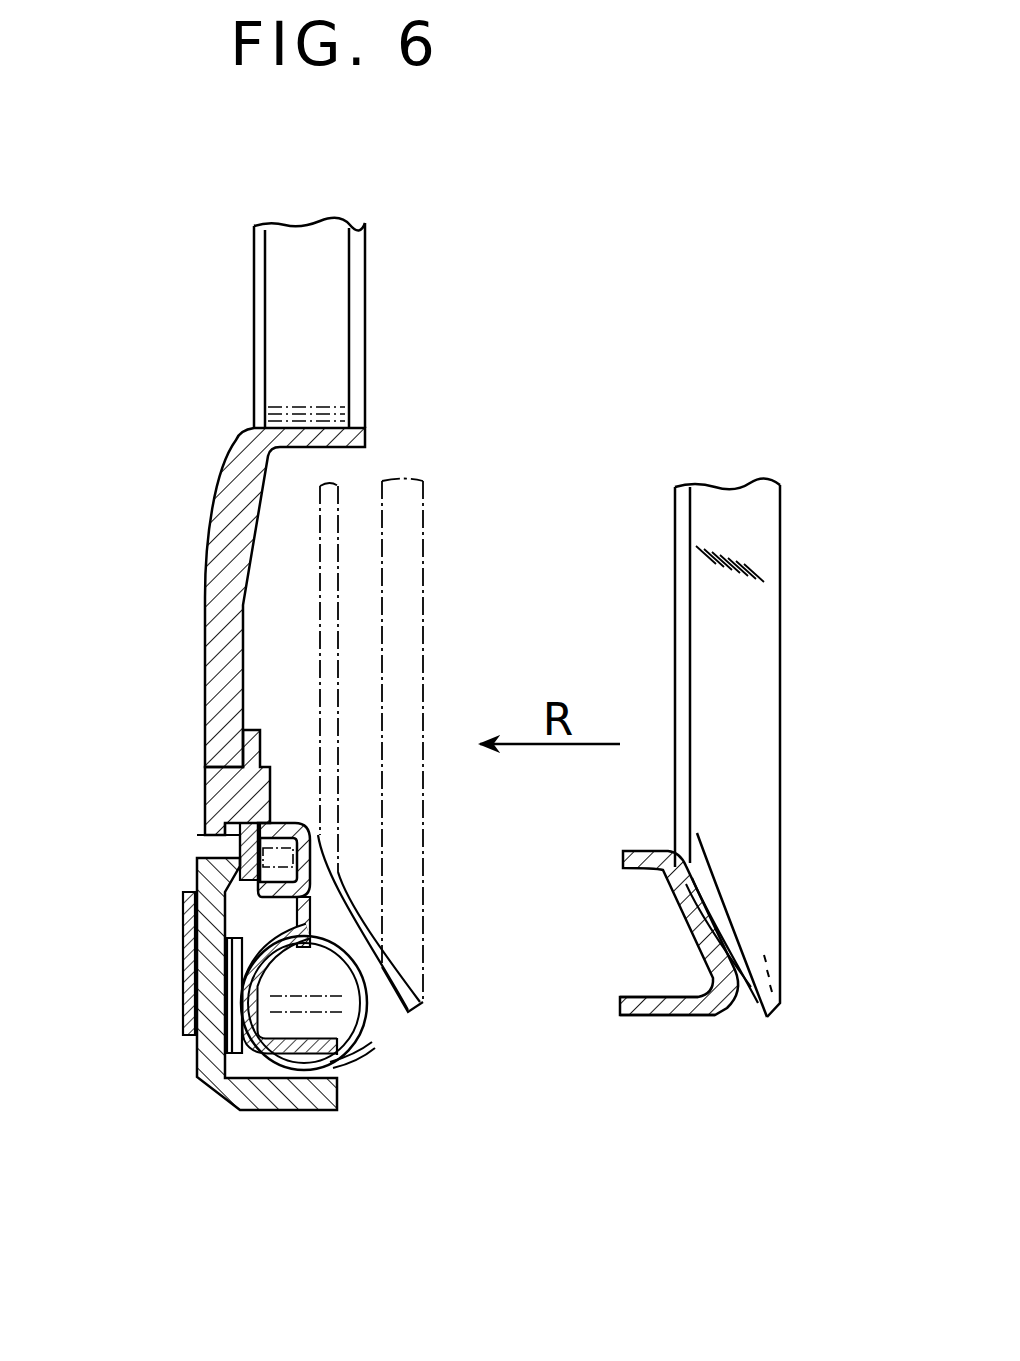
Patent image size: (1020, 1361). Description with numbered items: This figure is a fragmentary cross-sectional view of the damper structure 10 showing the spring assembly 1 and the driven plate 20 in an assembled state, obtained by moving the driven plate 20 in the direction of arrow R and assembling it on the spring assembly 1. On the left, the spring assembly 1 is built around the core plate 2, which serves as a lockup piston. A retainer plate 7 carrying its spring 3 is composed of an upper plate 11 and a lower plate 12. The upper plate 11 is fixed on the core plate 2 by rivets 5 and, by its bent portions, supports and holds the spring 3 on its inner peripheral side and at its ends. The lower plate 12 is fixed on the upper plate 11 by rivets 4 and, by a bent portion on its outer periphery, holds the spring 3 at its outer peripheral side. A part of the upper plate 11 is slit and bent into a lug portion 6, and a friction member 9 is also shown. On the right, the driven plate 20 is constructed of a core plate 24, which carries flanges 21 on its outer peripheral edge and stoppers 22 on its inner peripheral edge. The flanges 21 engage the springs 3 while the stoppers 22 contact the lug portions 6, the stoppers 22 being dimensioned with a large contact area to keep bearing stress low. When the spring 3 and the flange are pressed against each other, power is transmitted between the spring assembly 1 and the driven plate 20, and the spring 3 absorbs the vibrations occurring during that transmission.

The spring assembly 1 is at (384, 266).
The core plate 2 is at (222, 620).
The spring 3 is at (367, 1008).
The rivet 4 is at (195, 1057).
The rivet 5 is at (205, 770).
The lug portion 6 is at (317, 836).
The retainer plate 7 is at (215, 852).
The friction member 9 is at (185, 955).
The damper structure 10 is at (500, 330).
The upper plate 11 is at (300, 1072).
The lower plate 12 is at (257, 1113).
The driven plate 20 is at (773, 484).
The flange 21 is at (618, 1003).
The stopper 22 is at (625, 858).
The core plate 24 is at (683, 650).